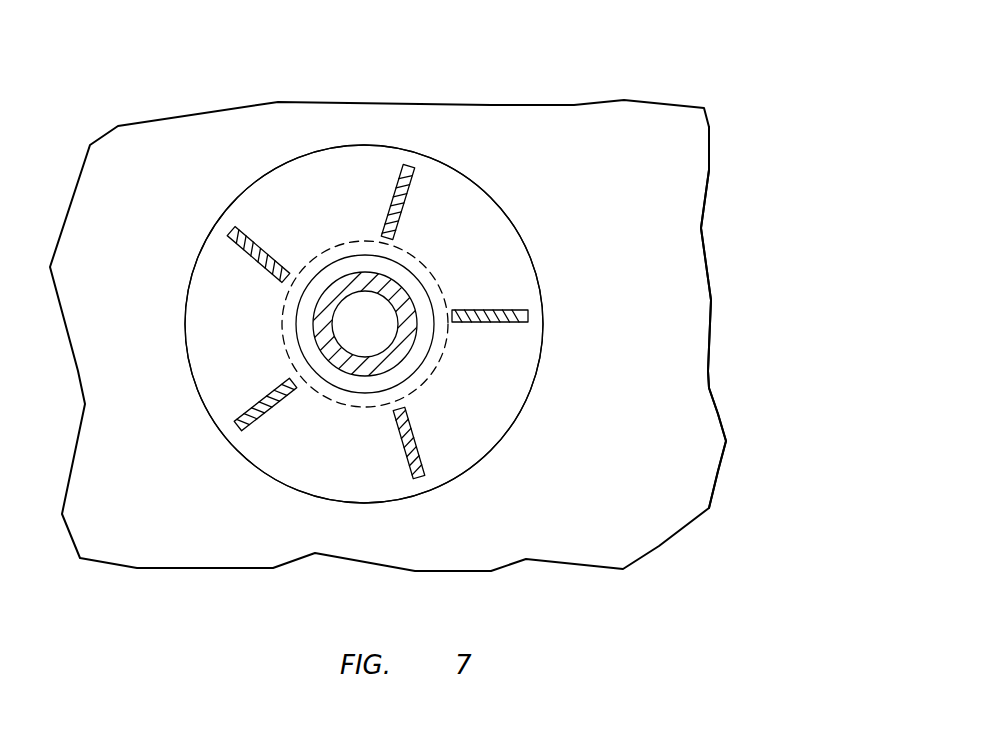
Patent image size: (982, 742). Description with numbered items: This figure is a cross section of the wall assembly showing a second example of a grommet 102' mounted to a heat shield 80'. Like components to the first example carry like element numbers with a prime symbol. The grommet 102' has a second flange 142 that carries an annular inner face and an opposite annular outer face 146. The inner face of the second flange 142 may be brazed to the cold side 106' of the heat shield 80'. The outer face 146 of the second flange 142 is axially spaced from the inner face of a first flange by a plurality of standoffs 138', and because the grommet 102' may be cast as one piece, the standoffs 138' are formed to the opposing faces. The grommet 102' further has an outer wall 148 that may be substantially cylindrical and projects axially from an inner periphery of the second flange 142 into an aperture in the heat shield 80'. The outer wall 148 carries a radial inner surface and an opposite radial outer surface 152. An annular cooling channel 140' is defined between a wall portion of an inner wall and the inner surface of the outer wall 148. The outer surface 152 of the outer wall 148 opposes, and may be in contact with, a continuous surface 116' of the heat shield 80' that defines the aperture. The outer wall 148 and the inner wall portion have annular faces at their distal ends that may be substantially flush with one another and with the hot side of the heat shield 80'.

The grommet 102' is at (428, 293).
The heat shield 80' is at (740, 317).
The cold side 106' is at (759, 325).
The outer face 146 is at (358, 163).
The second flange 142 is at (501, 240).
The cooling channel 140' is at (386, 299).
The standoffs 138' is at (426, 339).
The continuous surface 116' is at (280, 324).
The outer wall 148 is at (433, 358).
The outer surface 152 is at (425, 383).